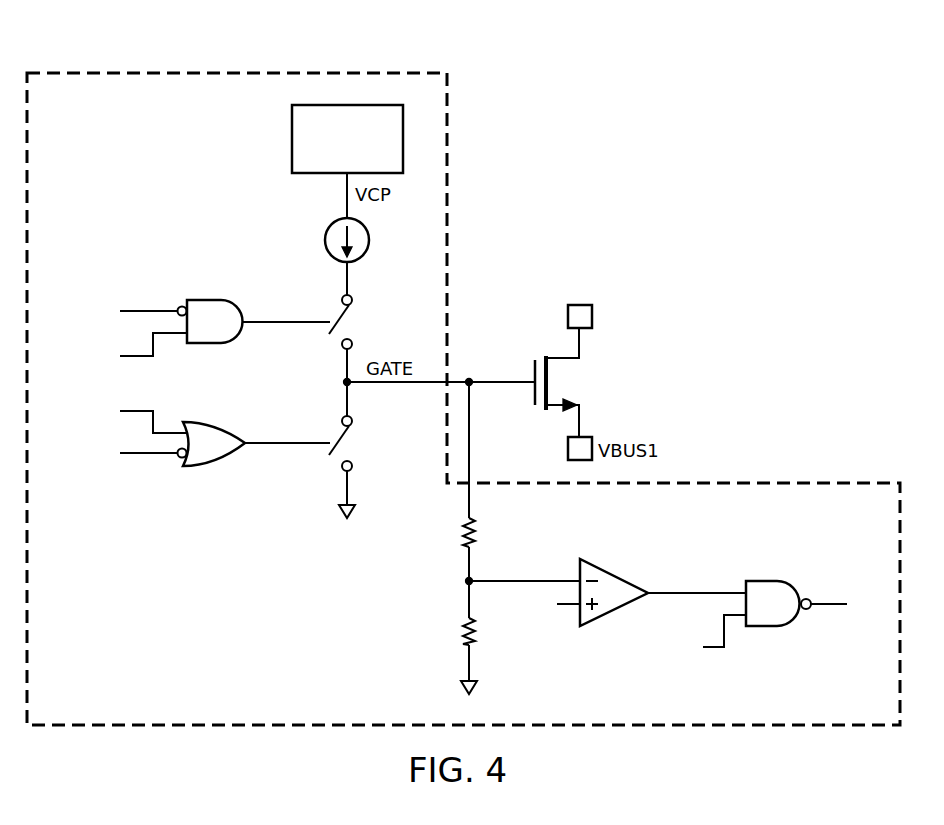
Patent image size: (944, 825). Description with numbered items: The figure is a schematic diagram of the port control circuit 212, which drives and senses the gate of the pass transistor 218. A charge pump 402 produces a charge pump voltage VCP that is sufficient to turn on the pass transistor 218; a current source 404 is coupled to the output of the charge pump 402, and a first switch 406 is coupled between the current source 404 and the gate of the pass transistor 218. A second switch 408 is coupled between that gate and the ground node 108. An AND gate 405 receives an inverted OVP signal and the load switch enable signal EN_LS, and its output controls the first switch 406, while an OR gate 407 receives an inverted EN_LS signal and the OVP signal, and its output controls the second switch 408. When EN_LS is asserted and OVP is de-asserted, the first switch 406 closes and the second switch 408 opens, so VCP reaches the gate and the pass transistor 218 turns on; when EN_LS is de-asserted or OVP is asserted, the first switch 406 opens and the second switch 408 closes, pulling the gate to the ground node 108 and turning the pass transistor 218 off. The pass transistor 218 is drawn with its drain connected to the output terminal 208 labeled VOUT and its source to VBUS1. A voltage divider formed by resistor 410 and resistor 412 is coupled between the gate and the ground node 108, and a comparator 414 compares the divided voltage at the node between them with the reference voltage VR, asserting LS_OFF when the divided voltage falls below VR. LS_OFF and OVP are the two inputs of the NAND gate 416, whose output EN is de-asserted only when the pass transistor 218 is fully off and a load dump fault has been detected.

The port control circuit 212 is at (195, 64).
The charge pump 402 is at (290, 137).
The current source 404 is at (325, 239).
The AND gate 405 is at (213, 298).
The first switch 406 is at (338, 316).
The OR gate 407 is at (217, 467).
The second switch 408 is at (338, 437).
The ground node 108 is at (337, 511).
The pass transistor 218 is at (533, 372).
The output terminal VOUT 208 is at (582, 303).
The resistor 410 is at (460, 527).
The resistor 412 is at (460, 628).
The comparator 414 is at (614, 571).
The NAND gate 416 is at (773, 628).